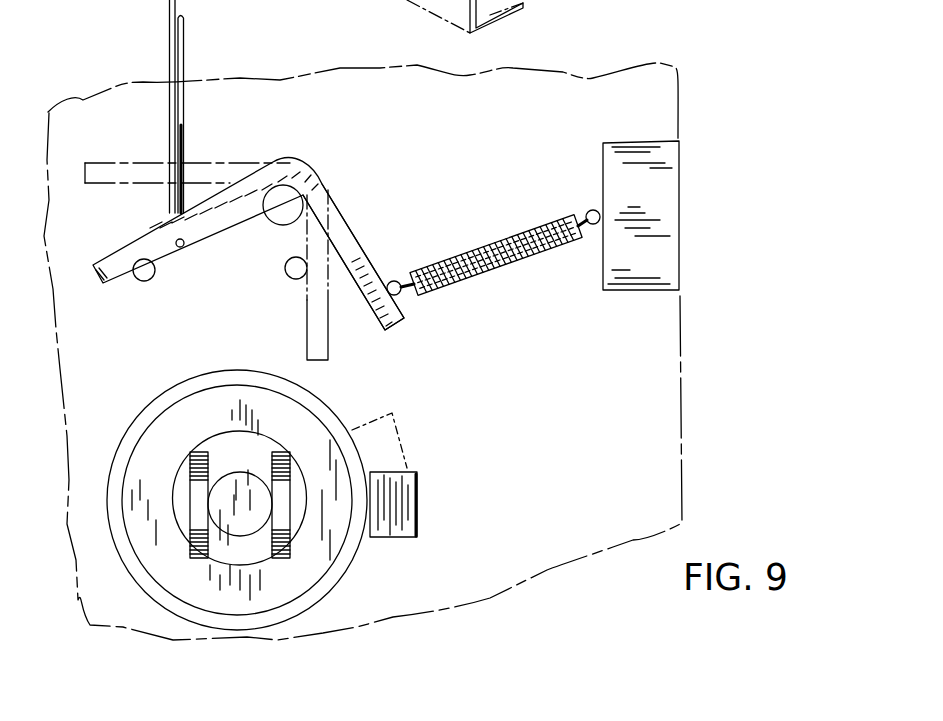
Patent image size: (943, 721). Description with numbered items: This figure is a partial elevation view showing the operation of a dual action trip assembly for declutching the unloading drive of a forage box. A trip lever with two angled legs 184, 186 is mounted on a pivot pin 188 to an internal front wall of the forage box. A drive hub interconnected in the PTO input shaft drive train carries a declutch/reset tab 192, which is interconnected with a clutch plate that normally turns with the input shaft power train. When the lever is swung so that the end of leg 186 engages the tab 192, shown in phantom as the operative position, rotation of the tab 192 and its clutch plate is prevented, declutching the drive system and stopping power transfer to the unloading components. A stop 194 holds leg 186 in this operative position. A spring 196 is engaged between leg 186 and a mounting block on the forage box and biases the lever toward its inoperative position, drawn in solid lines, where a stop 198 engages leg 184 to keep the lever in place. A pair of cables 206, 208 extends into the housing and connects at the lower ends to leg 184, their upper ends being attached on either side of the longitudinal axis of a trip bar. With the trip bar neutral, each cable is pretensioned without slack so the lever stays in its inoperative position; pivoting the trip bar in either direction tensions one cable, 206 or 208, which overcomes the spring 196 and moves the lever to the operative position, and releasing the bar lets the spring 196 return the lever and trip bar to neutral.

The leg 184 is at (143, 233).
The leg 186 is at (360, 237).
The pivot pin 188 is at (278, 225).
The declutch/reset tab 192 is at (397, 468).
The stop 194 is at (297, 279).
The spring 196 is at (502, 263).
The stop 198 is at (147, 281).
The cable 206 is at (169, 55).
The cable 208 is at (184, 58).